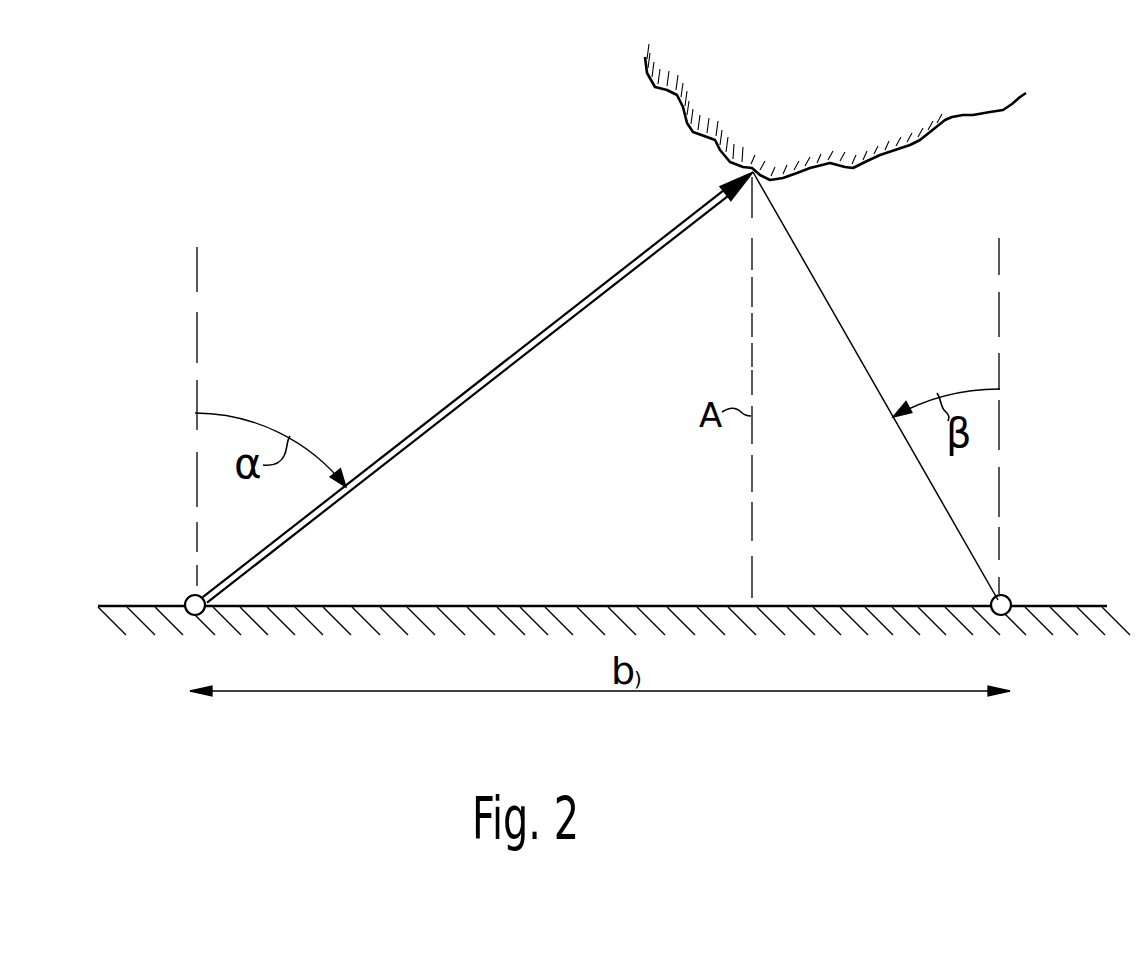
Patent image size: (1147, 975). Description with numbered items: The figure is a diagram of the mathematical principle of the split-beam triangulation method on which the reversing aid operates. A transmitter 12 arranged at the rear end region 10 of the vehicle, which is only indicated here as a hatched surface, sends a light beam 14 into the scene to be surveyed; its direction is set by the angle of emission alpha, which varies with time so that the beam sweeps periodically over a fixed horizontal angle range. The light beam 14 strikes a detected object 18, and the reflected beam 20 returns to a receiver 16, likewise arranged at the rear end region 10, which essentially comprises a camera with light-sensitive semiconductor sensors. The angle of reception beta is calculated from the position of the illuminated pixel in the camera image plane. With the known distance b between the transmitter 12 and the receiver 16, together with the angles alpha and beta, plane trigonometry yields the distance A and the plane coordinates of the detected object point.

The rear end region 10 is at (860, 615).
The transmitter 12 is at (188, 605).
The light beam 14 is at (563, 316).
The receiver 16 is at (1010, 601).
The detected object 18 is at (938, 118).
The reflected beam 20 is at (826, 303).